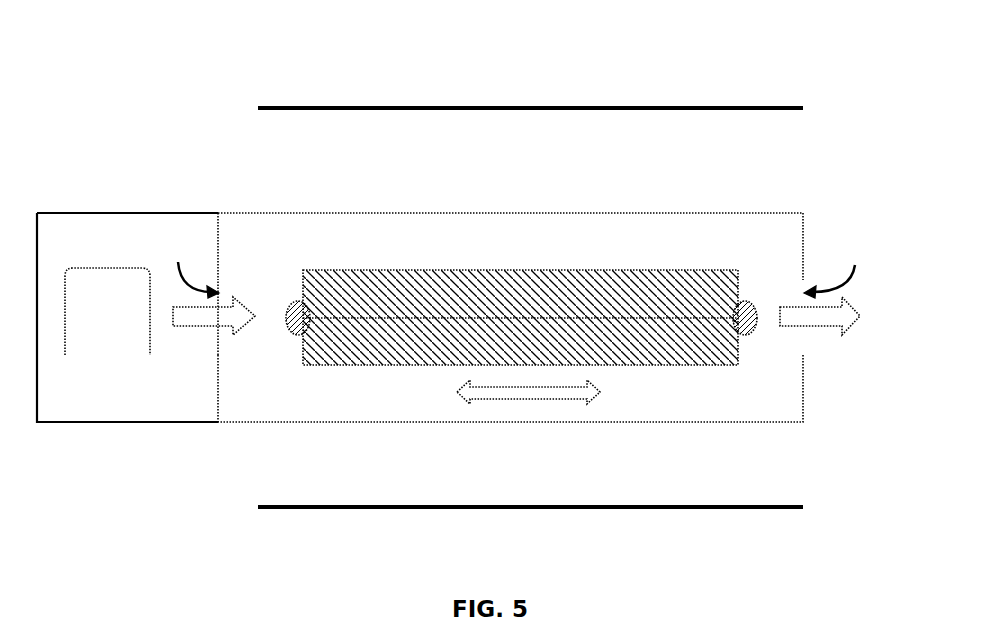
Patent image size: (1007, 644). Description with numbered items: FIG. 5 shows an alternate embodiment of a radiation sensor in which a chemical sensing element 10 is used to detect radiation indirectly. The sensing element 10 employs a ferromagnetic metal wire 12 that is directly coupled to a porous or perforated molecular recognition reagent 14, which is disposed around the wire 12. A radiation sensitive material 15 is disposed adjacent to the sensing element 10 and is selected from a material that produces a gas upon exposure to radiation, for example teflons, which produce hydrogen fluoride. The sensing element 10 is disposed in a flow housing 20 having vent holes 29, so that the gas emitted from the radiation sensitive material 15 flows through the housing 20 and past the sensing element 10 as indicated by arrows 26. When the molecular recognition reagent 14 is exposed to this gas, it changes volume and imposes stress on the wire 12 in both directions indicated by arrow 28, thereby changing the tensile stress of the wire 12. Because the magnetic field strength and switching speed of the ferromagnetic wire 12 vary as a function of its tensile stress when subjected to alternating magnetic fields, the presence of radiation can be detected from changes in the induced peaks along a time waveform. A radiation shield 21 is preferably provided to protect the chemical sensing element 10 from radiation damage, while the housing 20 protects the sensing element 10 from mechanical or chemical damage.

The sensing element 10 is at (690, 383).
The ferromagnetic metal wire 12 is at (497, 318).
The molecular recognition reagent 14 is at (660, 270).
The radiation sensitive material 15 is at (102, 268).
The flow housing 20 is at (352, 212).
The radiation shield 21 is at (598, 106).
The arrows 26 is at (190, 328).
The arrow 28 is at (537, 400).
The vent holes 29 is at (518, 270).